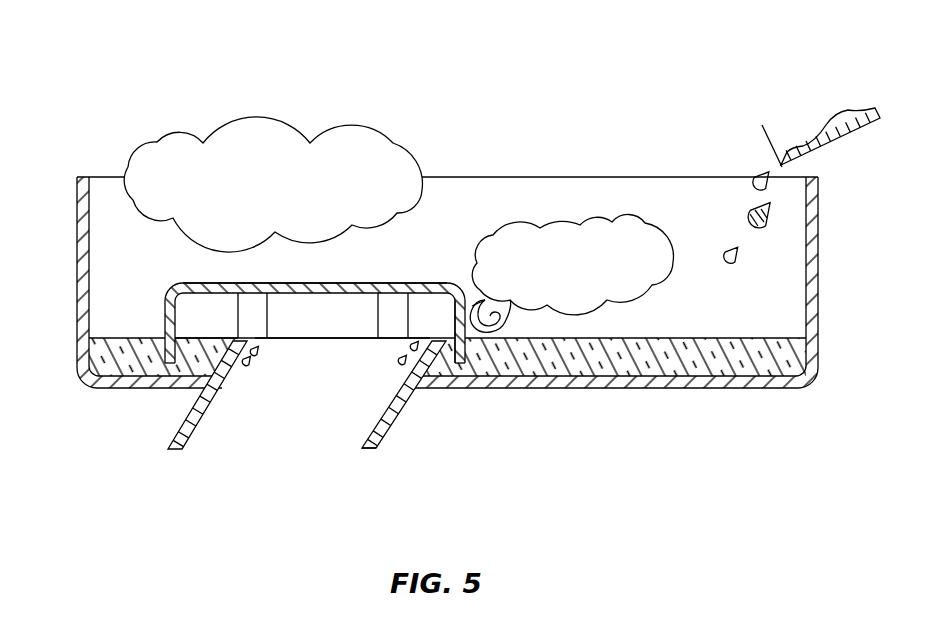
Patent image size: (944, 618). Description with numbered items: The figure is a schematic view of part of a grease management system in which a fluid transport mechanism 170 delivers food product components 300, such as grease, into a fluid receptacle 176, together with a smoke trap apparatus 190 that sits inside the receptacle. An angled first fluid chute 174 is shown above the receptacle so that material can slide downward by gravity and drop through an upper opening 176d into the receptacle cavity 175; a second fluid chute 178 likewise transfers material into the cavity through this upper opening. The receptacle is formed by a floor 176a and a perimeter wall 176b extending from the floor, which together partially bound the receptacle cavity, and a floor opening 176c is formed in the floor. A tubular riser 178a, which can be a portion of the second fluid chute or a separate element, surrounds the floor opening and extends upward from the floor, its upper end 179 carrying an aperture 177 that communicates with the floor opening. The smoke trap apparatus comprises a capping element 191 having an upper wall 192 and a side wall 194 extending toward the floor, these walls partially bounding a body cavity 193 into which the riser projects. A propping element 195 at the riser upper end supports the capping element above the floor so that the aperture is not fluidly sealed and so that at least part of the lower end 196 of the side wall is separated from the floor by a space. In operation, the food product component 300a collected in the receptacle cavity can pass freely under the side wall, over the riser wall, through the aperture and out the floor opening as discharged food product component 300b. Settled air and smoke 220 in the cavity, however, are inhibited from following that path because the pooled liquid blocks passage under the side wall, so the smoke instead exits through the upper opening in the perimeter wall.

The fluid transport mechanism 170 is at (483, 235).
The first fluid chute 174 is at (802, 96).
The receptacle cavity 175 is at (754, 317).
The fluid receptacle 176 is at (782, 295).
The floor 176a is at (690, 380).
The perimeter wall 176b is at (810, 253).
The floor opening 176c is at (205, 410).
The upper opening 176d is at (680, 180).
The aperture 177 is at (307, 356).
The second fluid chute 178 is at (347, 402).
The tubular riser 178a is at (397, 406).
The upper end 179 is at (431, 350).
The smoke trap apparatus 190 is at (277, 249).
The capping element 191 is at (237, 265).
The upper wall 192 is at (207, 284).
The body cavity 193 is at (213, 328).
The side wall 194 is at (456, 328).
The propping element 195 is at (252, 318).
The lower end 196 is at (457, 363).
The settled air and/or smoke 220 is at (584, 247).
The food product components 300 is at (752, 212).
The food product component 300a is at (112, 362).
The discharged food product component 300b is at (247, 362).